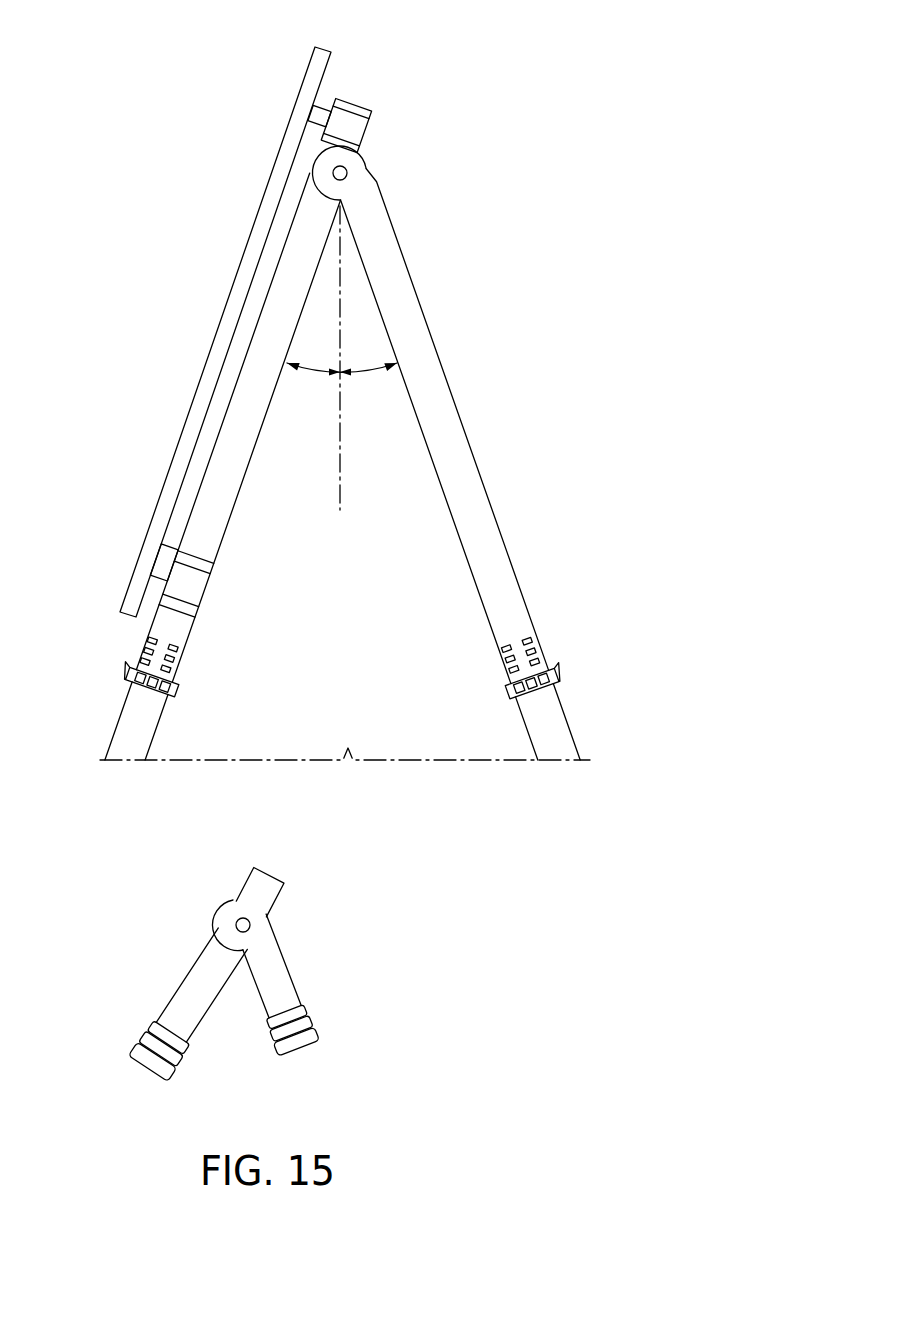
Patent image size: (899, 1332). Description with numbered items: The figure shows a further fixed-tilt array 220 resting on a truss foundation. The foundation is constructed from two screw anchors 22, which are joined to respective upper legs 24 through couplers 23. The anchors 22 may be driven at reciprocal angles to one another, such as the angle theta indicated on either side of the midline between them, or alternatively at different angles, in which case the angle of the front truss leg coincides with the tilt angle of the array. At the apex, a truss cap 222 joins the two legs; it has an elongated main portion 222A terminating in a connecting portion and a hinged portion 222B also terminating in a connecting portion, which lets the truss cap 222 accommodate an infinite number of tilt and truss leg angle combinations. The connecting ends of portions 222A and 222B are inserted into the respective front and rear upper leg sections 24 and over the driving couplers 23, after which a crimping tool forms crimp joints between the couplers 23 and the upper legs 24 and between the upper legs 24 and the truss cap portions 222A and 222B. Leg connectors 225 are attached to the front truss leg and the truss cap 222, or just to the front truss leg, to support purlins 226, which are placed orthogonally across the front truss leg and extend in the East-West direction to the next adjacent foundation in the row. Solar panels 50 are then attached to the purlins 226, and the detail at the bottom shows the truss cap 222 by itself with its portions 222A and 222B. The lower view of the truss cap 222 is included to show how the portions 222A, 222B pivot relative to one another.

The fixed-tilt array 220 is at (476, 42).
The solar panels 50 is at (219, 333).
The upper legs 24 is at (470, 442).
The screw anchors 22 is at (113, 732).
The couplers 23 is at (553, 675).
The leg connectors 225 is at (372, 119).
The purlins 226 is at (322, 106).
The truss cap 222 is at (398, 164).
The elongated main portion 222A is at (168, 957).
The hinged portion 222B is at (308, 956).